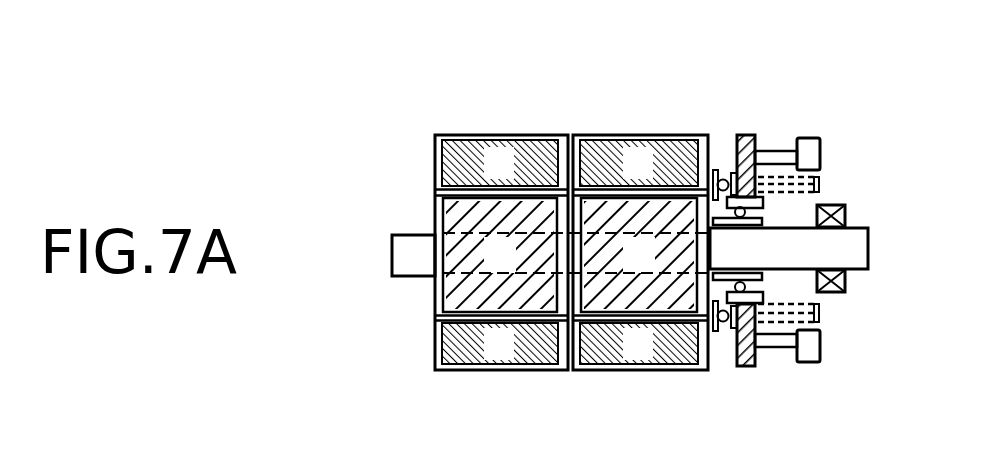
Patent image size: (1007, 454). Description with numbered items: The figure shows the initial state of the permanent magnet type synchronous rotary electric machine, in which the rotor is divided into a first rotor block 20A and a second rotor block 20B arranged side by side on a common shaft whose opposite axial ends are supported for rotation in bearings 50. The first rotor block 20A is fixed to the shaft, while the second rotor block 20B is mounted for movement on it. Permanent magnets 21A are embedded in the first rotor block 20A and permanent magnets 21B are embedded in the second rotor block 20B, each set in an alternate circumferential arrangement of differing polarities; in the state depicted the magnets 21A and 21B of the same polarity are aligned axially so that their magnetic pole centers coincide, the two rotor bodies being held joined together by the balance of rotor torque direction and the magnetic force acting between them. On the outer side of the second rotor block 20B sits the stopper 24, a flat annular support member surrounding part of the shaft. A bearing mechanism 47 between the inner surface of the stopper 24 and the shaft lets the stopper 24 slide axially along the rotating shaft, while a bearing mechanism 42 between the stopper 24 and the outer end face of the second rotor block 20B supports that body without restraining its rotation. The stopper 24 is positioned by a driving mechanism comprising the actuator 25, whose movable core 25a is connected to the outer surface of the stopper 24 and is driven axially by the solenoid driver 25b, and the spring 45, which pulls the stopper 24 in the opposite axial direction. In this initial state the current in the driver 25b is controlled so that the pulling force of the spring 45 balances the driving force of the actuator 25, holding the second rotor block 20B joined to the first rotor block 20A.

The first rotor block 20A is at (440, 209).
The second rotor block 20B is at (643, 199).
The permanent magnets 21A is at (494, 137).
The permanent magnets 21B is at (607, 137).
The stopper 24 is at (750, 133).
The actuator 25 is at (815, 217).
The movable core 25a is at (779, 149).
The driver 25b is at (822, 151).
The bearing mechanism 42 is at (722, 178).
The spring 45 is at (812, 176).
The bearing mechanism 47 is at (750, 213).
The bearings 50 is at (850, 281).